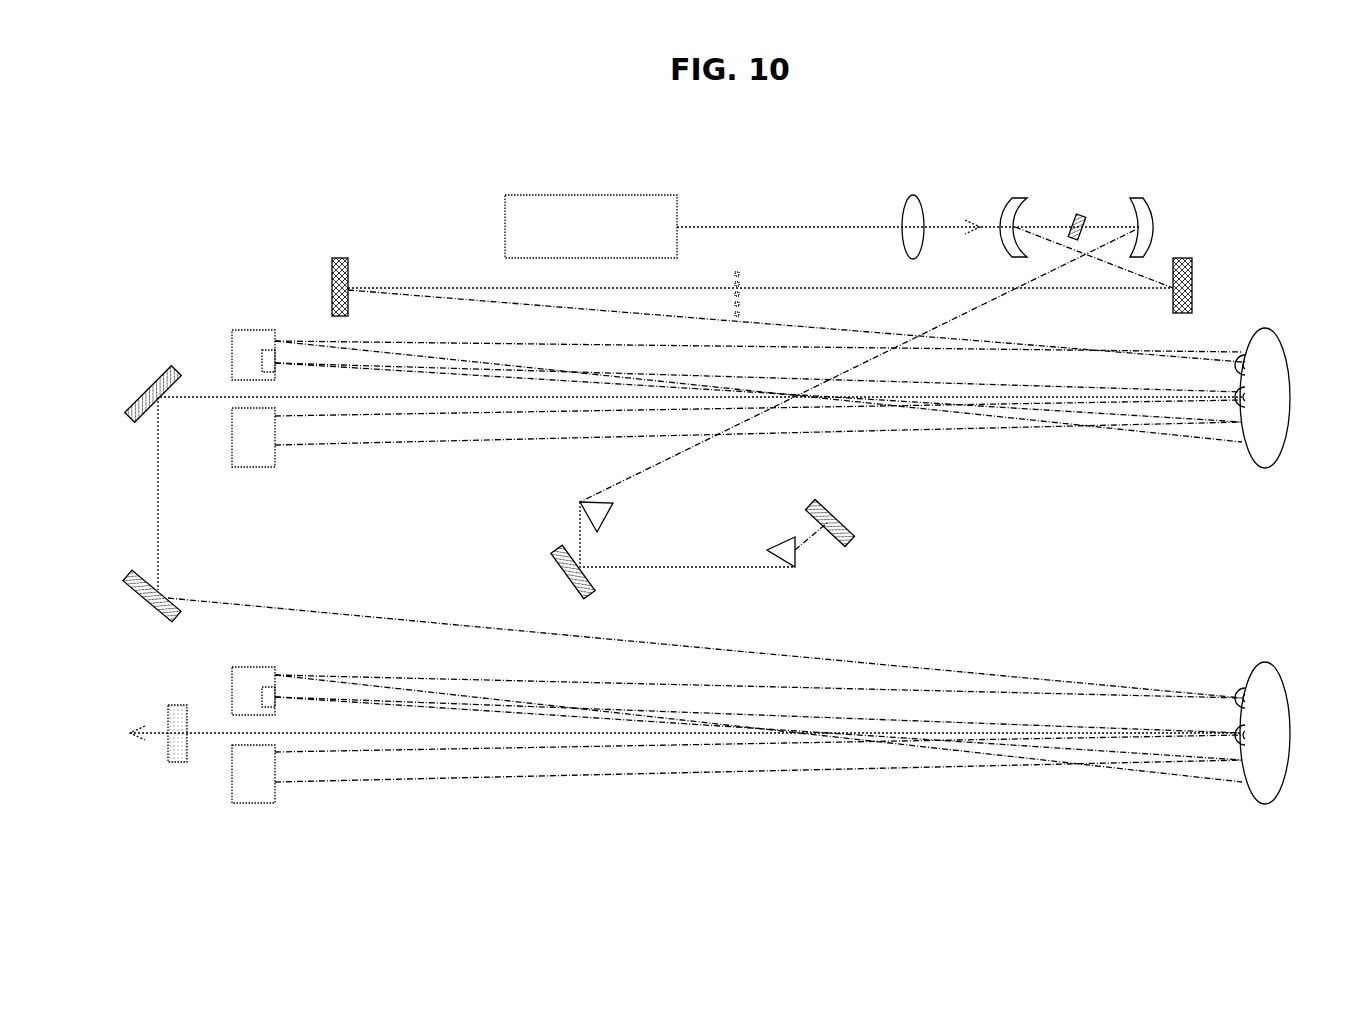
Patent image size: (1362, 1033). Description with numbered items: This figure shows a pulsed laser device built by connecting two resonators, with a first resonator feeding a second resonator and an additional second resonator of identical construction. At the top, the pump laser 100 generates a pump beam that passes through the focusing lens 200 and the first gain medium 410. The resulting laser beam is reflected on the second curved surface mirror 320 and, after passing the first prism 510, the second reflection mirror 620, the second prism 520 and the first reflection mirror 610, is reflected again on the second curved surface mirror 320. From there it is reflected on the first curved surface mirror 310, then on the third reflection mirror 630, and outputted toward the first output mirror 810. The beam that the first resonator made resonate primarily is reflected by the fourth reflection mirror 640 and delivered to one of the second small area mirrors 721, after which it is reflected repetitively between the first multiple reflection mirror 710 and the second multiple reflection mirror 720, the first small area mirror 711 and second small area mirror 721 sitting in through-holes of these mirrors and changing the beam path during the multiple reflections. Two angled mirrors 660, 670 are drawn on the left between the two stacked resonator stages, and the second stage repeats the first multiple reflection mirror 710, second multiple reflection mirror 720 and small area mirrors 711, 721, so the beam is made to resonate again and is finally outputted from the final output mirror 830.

The pump laser 100 is at (590, 195).
The focusing lens 200 is at (913, 195).
The first curved surface mirror 310 is at (1020, 197).
The second curved surface mirror 320 is at (1128, 197).
The first gain medium 410 is at (1078, 214).
The first prism 510 is at (614, 506).
The second prism 520 is at (778, 540).
The first reflection mirror 610 is at (852, 535).
The second reflection mirror 620 is at (558, 570).
The third reflection mirror 630 is at (1182, 258).
The fourth reflection mirror 640 is at (339, 258).
The reflecting mirror 660 is at (167, 368).
The reflecting mirror 670 is at (142, 570).
The first multiple reflection mirror 710 is at (255, 467).
The first small area mirror 711 is at (268, 348).
The second multiple reflection mirror 720 is at (1265, 328).
The second small area mirror 721 is at (1258, 360).
The first output mirror 810 is at (740, 272).
The final output mirror 830 is at (178, 705).